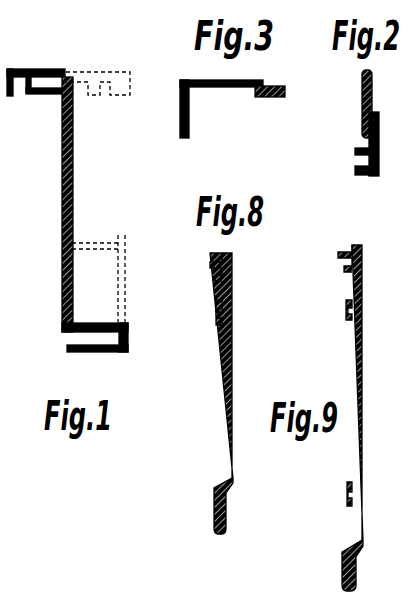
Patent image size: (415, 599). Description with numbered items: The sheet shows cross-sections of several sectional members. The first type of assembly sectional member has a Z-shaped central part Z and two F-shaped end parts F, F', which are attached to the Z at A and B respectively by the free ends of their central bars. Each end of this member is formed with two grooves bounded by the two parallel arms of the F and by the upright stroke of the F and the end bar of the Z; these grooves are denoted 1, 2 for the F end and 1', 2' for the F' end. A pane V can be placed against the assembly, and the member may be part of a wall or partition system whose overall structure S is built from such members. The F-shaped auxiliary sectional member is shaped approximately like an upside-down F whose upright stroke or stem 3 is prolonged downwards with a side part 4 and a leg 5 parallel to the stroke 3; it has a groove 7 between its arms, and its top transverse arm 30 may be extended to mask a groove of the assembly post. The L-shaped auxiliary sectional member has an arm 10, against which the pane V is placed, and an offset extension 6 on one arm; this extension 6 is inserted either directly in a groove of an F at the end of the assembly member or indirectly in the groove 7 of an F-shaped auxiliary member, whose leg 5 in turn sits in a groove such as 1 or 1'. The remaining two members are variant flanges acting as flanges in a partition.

In FIG. 1, the groove 1' is at (56, 51).
In FIG. 1, the groove 2' is at (34, 107).
In FIG. 1, the attachment point A is at (30, 86).
In FIG. 1, the F-shaped end part F' is at (57, 34).
In FIG. 1, the Z-shaped central part Z is at (60, 211).
In FIG. 1, the pane V is at (62, 278).
In FIG. 1, the groove 1 is at (79, 338).
In FIG. 1, the groove 2 is at (139, 320).
In FIG. 1, the attachment point B is at (115, 324).
In FIG. 1, the F-shaped end part F is at (105, 373).
In FIG. 1, the sheet S is at (0, 508).
In FIG. 3, the arm 10 is at (190, 122).
In FIG. 3, the offset extension 6 is at (274, 98).
In FIG. 2, the leg 5 is at (362, 81).
In FIG. 2, the side part 4 is at (372, 118).
In FIG. 2, the upright stroke 3 is at (380, 144).
In FIG. 2, the groove 7 is at (362, 162).
In FIG. 2, the top transverse arm 30 is at (371, 176).